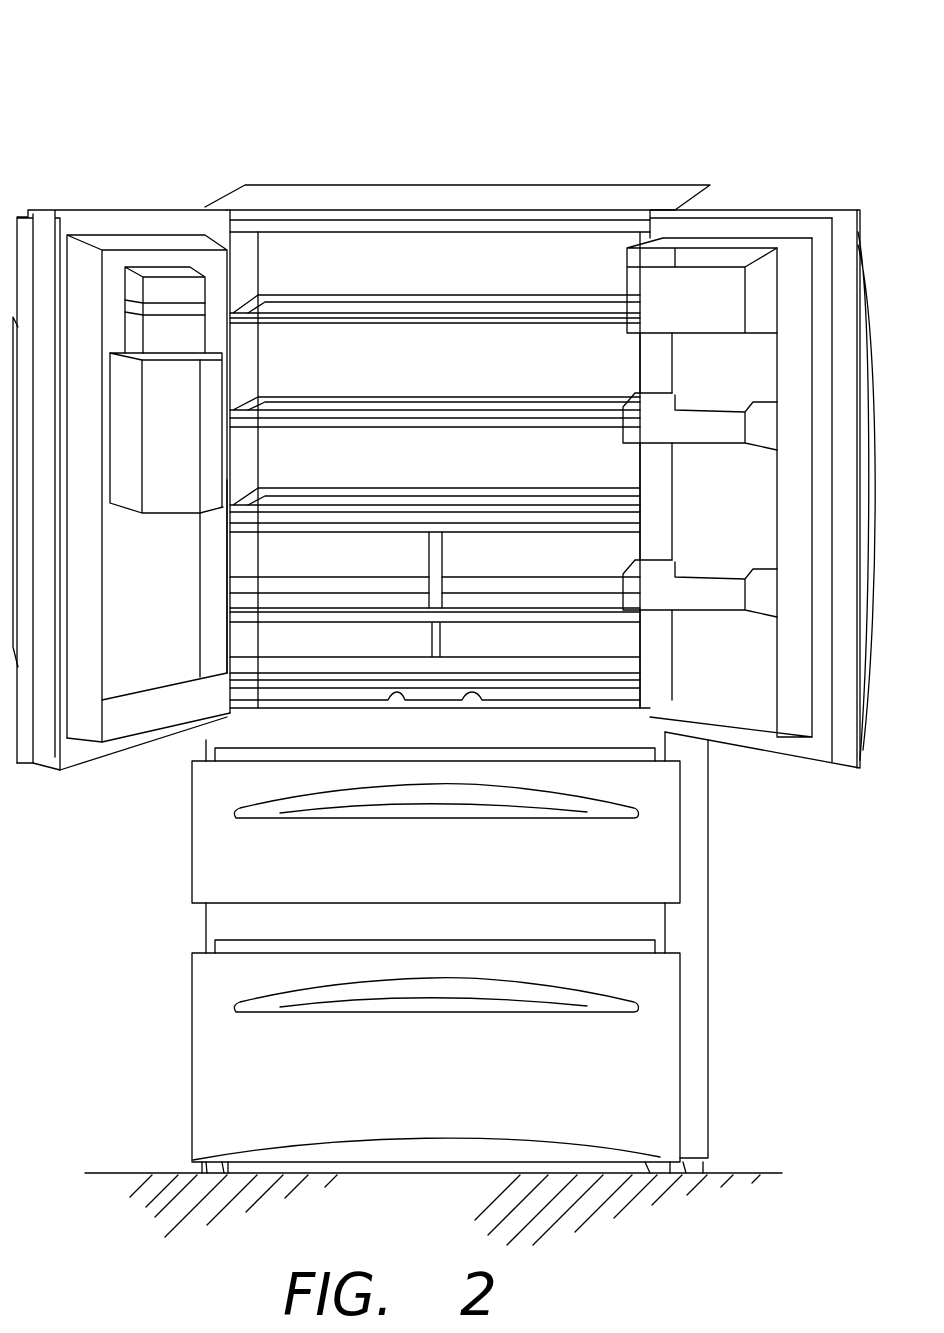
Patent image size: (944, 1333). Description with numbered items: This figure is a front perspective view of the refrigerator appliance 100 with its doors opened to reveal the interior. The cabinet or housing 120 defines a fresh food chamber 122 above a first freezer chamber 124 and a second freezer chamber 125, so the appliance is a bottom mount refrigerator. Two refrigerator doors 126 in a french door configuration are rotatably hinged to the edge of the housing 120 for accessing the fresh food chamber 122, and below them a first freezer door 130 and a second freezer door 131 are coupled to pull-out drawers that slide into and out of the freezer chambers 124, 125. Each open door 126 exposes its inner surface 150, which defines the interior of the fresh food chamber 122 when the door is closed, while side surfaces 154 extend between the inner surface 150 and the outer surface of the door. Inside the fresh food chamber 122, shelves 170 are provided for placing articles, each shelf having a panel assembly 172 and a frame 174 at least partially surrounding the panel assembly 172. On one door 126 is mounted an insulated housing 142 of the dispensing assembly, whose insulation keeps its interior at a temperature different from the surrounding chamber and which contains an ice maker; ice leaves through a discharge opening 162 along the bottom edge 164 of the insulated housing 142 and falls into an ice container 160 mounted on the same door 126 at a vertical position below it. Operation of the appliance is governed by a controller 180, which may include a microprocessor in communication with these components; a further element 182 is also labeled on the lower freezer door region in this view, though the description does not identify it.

The refrigerator appliance 100 is at (678, 108).
The cabinet or housing 120 is at (208, 917).
The fresh food chamber 122 is at (517, 250).
The first freezer chamber 124 is at (250, 757).
The second freezer chamber 125 is at (250, 944).
The refrigerator doors 126 is at (180, 195).
The first freezer door 130 is at (650, 850).
The second freezer door 131 is at (640, 1062).
The insulated housing 142 is at (197, 290).
The inner surface 150 is at (112, 200).
The side surfaces 154 is at (50, 200).
The ice container 160 is at (200, 450).
The discharge opening 162 is at (192, 334).
The bottom edge 164 is at (195, 378).
The shelves 170 is at (370, 285).
The panel assembly 172 is at (523, 297).
The frame 174 is at (407, 297).
The controller 180 is at (570, 736).
The lower drawer handle 182 is at (643, 916).